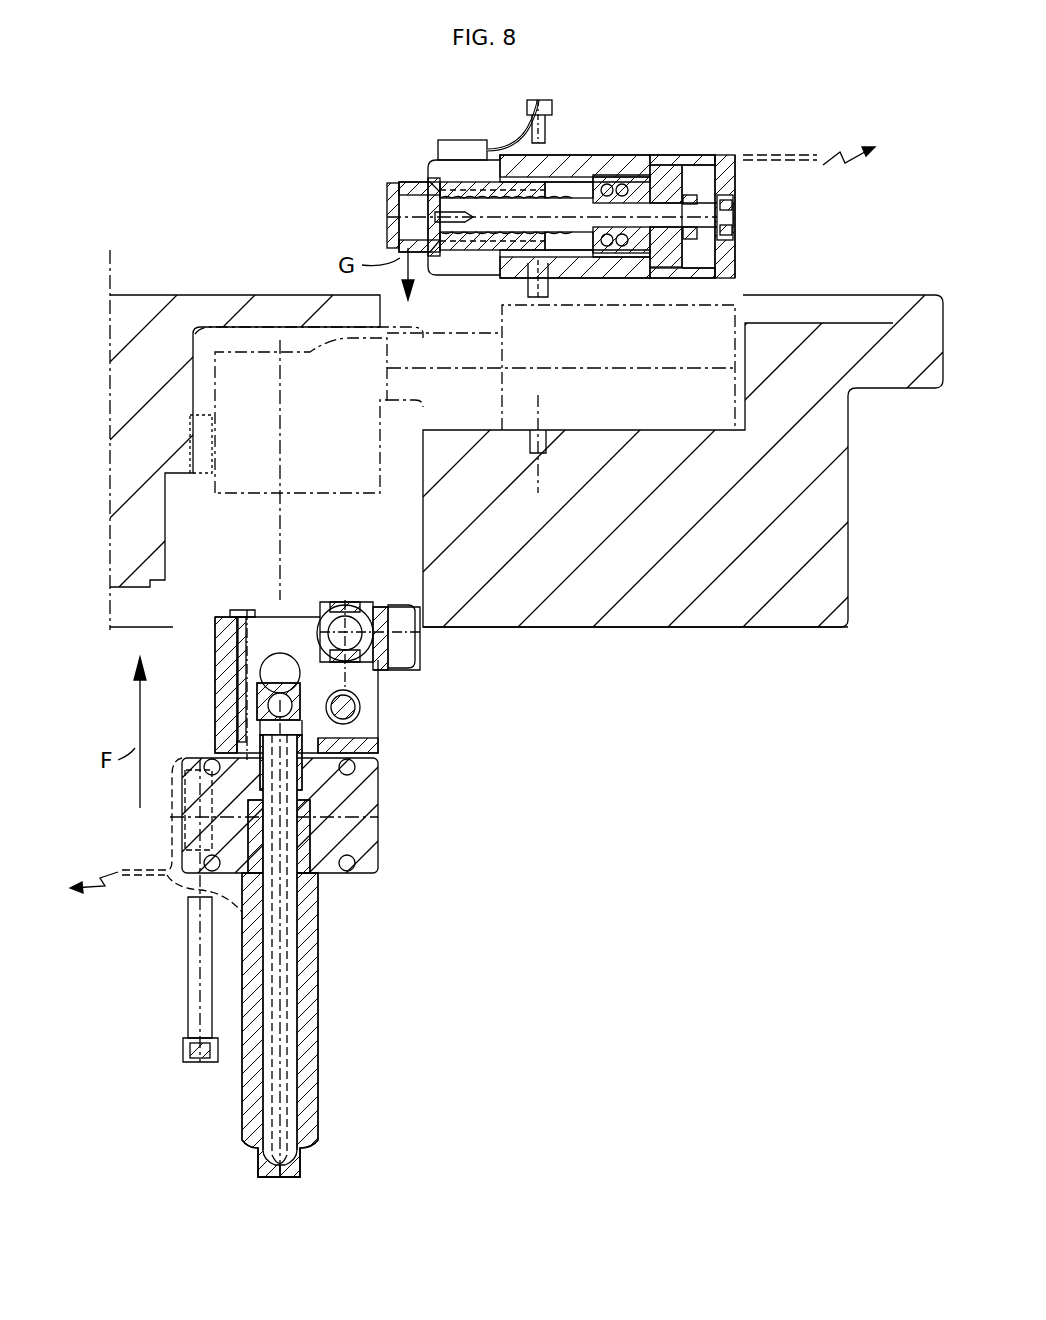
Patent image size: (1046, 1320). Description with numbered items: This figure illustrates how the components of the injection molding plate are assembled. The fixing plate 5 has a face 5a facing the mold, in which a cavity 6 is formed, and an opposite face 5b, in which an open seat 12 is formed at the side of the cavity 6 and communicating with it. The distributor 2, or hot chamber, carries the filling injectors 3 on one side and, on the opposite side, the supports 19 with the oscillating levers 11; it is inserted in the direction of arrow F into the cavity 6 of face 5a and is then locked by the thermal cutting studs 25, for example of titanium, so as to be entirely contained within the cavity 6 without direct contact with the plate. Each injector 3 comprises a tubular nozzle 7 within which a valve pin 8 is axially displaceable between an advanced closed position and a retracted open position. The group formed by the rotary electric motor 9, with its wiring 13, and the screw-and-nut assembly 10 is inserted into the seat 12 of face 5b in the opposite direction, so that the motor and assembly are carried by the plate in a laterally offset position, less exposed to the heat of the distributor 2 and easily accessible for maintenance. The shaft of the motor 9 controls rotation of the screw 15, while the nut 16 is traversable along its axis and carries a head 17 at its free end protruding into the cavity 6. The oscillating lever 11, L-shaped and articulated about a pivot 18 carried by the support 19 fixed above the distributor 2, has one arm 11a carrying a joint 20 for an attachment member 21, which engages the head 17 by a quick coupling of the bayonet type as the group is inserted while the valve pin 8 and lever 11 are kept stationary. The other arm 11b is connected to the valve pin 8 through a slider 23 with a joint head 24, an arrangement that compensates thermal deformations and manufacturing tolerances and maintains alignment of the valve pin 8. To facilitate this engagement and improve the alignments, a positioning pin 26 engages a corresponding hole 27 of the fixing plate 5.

The distributor 2 is at (370, 830).
The filling injector 3 is at (329, 1035).
The fixing plate 5 is at (858, 538).
The face of the fixing plate facing the mold 5a is at (640, 628).
The face of the fixing plate facing away from the mold 5b is at (160, 295).
The cavity 6 is at (333, 421).
The tubular nozzle 7 is at (312, 1108).
The valve pin 8 is at (282, 960).
The rotary electric motor 9 is at (742, 265).
The screw-and-nut assembly 10 is at (635, 150).
The oscillating lever 11 is at (380, 712).
The arm of the oscillating lever 11a is at (330, 612).
The arm of the oscillating lever 11b is at (258, 722).
The open seat 12 is at (648, 348).
The wiring 13 is at (500, 125).
The screw 15 is at (575, 245).
The nut 16 is at (690, 175).
The head 17 is at (388, 186).
The pivot 18 is at (352, 718).
The support 19 is at (238, 620).
The joint 20 is at (350, 605).
The attachment member 21 is at (400, 670).
The slider 23 is at (268, 685).
The joint head 24 is at (280, 655).
The thermal cutting stud 25 is at (188, 988).
The positioning pin 26 is at (525, 285).
The hole 27 is at (538, 435).